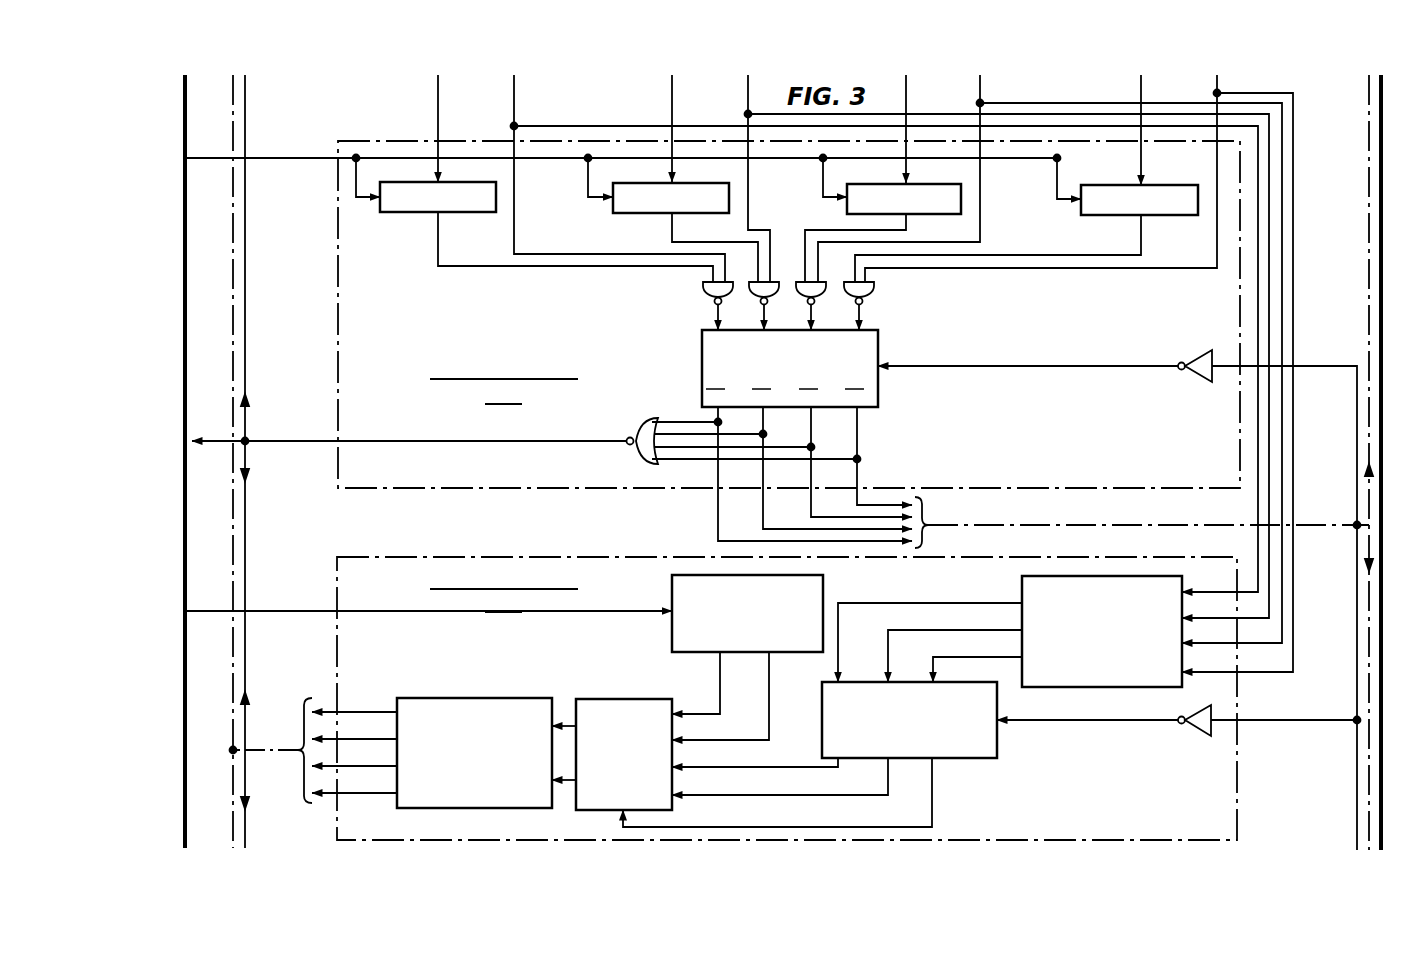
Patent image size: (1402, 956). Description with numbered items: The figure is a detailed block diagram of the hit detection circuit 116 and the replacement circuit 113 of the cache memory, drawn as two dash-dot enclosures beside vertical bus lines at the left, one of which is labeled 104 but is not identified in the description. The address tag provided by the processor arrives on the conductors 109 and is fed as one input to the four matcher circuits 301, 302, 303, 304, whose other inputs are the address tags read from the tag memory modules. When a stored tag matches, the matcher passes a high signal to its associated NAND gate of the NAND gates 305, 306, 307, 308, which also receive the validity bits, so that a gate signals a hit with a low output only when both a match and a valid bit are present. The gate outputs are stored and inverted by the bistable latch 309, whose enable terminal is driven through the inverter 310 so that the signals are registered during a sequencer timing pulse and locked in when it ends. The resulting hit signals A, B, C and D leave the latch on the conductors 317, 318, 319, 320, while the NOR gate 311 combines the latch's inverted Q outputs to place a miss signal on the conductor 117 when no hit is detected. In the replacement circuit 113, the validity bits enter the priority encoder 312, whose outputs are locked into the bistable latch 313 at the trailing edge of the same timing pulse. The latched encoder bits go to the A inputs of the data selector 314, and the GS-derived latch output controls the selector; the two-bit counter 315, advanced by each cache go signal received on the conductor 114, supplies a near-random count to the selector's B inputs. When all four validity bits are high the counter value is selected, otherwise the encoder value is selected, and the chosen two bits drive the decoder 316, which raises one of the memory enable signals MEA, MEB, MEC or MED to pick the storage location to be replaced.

The bus 104 is at (187, 537).
The conductor 109 is at (206, 157).
The replacement circuit 113 is at (500, 557).
The conductor 114 is at (206, 610).
The hit detection circuit 116 is at (338, 376).
The conductor 117 is at (287, 440).
The matcher circuit 301 is at (410, 213).
The matcher circuit 302 is at (638, 214).
The matcher circuit 303 is at (846, 214).
The matcher circuit 304 is at (1105, 216).
The NAND gate 305 is at (703, 290).
The NAND gate 306 is at (757, 303).
The NAND gate 307 is at (832, 305).
The NAND gate 308 is at (874, 290).
The bistable latch 309 is at (702, 371).
The inverter 310 is at (1200, 356).
The NOR gate 311 is at (658, 420).
The priority encoder 312 is at (1022, 592).
The bistable latch 313 is at (968, 758).
The data selector 314 is at (631, 683).
The two-bit counter 315 is at (672, 590).
The decoder 316 is at (486, 683).
The conductor 317 is at (718, 500).
The conductor 318 is at (763, 500).
The conductor 319 is at (811, 500).
The conductor 320 is at (857, 500).